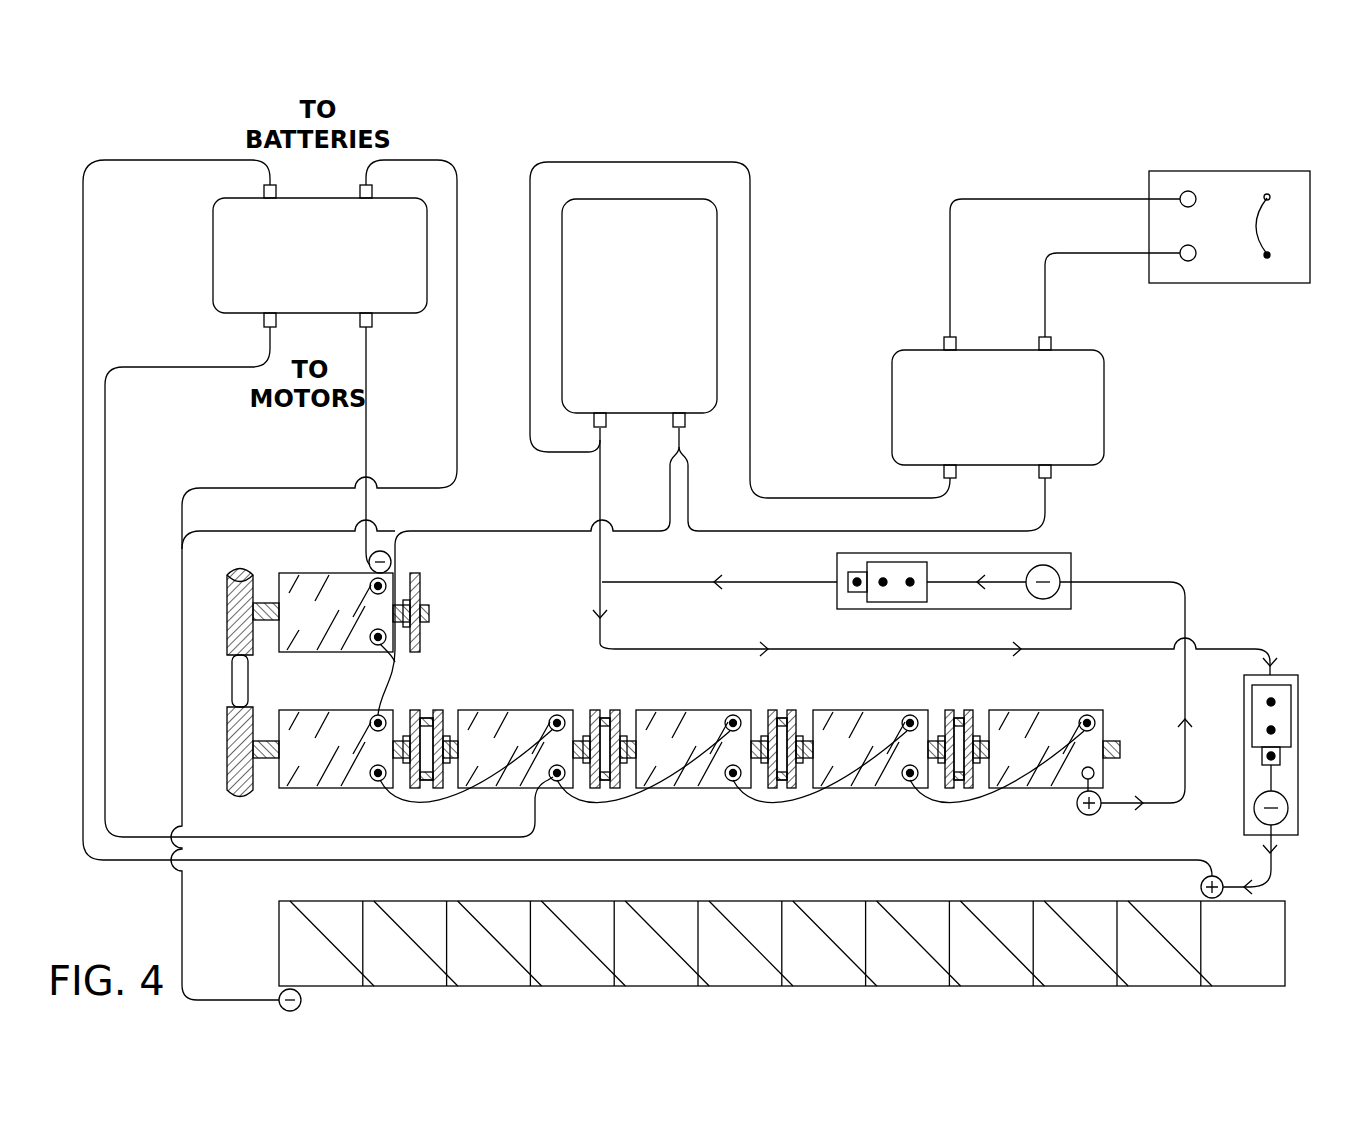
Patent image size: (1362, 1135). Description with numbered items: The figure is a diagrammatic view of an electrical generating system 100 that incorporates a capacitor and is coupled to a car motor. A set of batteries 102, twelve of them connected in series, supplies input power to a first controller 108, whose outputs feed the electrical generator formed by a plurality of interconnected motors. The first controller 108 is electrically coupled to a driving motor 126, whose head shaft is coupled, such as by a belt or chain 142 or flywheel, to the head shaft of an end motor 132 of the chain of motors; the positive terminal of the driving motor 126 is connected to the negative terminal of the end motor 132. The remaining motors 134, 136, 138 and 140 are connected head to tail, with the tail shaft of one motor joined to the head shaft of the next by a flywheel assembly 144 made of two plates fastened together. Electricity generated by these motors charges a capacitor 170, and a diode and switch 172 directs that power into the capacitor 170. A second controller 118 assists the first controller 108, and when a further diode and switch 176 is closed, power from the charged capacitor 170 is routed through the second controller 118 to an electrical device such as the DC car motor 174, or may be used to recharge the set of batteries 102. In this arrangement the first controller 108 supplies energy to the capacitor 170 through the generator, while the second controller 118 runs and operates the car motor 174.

The electrical generating system 100 is at (65, 145).
The set of batteries 102 is at (1272, 948).
The first controller 108 is at (213, 258).
The second controller 118 is at (1104, 410).
The driving motor 126 is at (308, 585).
The end motor 132 is at (309, 790).
The motor 134 is at (485, 720).
The motor 136 is at (661, 722).
The motor 138 is at (838, 722).
The motor 140 is at (1012, 720).
The belt or chain 142 is at (227, 640).
The flywheel assembly 144 is at (593, 703).
The capacitor 170 is at (642, 197).
The diode and switch 172 is at (928, 609).
The car motor 174 is at (1230, 283).
The diode and switch 176 is at (1298, 752).